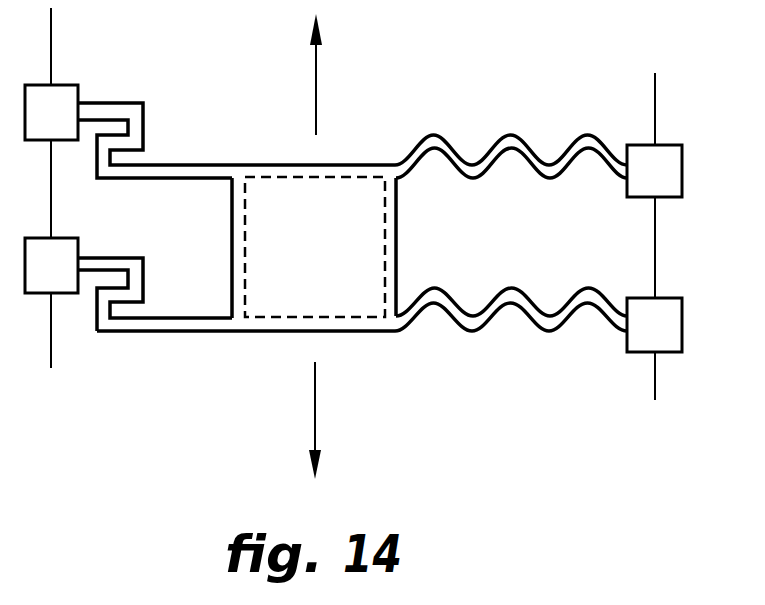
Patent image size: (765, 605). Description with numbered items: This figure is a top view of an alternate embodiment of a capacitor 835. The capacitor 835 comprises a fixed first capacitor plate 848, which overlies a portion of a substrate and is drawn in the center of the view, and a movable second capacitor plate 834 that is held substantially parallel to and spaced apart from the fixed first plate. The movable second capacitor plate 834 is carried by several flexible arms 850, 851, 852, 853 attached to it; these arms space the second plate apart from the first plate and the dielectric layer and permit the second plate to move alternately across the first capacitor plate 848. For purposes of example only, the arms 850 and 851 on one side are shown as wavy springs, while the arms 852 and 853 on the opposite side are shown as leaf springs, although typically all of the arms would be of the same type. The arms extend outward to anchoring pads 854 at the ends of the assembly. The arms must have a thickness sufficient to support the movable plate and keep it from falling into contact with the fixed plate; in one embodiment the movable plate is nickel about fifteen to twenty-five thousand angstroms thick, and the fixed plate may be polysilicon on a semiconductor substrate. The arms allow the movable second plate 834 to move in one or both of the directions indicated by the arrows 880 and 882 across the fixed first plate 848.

The movable second capacitor plate 834 is at (273, 322).
The capacitor 835 is at (363, 340).
The fixed first capacitor plate 848 is at (285, 253).
The flexible arm 850 is at (528, 146).
The flexible arm 851 is at (533, 305).
The flexible arm 852 is at (172, 167).
The flexible arm 853 is at (134, 323).
The contact pad 854 is at (668, 180).
The arrow 880 is at (316, 85).
The arrow 882 is at (315, 423).